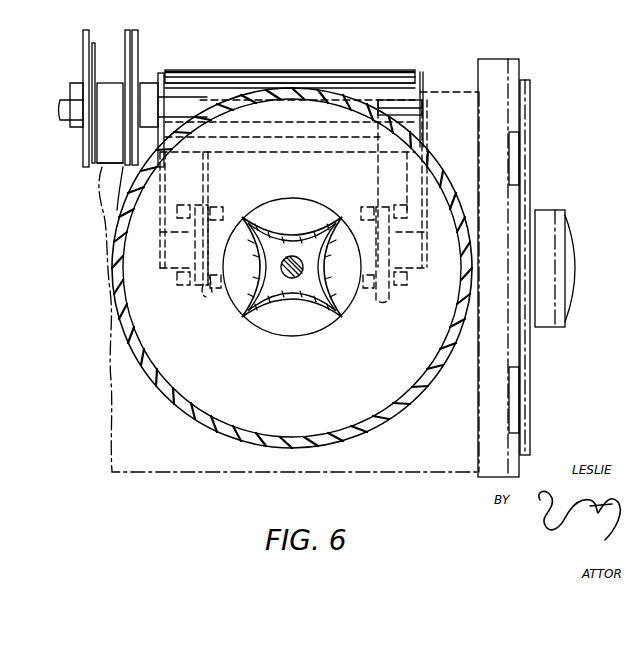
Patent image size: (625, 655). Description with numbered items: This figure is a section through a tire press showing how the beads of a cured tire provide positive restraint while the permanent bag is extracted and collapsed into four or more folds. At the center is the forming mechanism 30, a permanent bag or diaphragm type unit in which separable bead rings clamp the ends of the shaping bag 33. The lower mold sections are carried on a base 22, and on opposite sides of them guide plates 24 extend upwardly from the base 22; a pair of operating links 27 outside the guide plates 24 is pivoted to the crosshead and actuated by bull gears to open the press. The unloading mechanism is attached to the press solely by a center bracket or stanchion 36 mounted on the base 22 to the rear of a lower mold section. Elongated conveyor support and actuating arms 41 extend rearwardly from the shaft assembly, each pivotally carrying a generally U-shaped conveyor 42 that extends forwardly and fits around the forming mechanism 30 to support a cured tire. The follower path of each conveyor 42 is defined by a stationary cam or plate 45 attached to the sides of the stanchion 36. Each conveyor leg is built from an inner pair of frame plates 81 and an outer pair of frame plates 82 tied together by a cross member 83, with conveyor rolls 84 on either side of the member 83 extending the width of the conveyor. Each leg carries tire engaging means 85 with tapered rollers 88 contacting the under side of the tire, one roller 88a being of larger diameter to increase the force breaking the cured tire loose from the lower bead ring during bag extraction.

The base 22 is at (440, 435).
The guide plates 24 is at (497, 178).
The operating links 27 is at (553, 218).
The forming mechanism 30 is at (307, 193).
The shaping bag 33 is at (325, 332).
The center bracket or stanchion 36 is at (108, 80).
The conveyor support and actuating arms 41 is at (131, 37).
The conveyor 42 is at (326, 70).
The stationary cam or plate 45 is at (121, 153).
The inner frame plates 81 is at (200, 97).
The outer frame plates 82 is at (383, 108).
The cross member 83 is at (423, 115).
The conveyor rolls 84 is at (300, 148).
The tire engaging means 85 is at (203, 292).
The tapered rollers 88 is at (177, 205).
The enlarged roller 88a is at (210, 288).